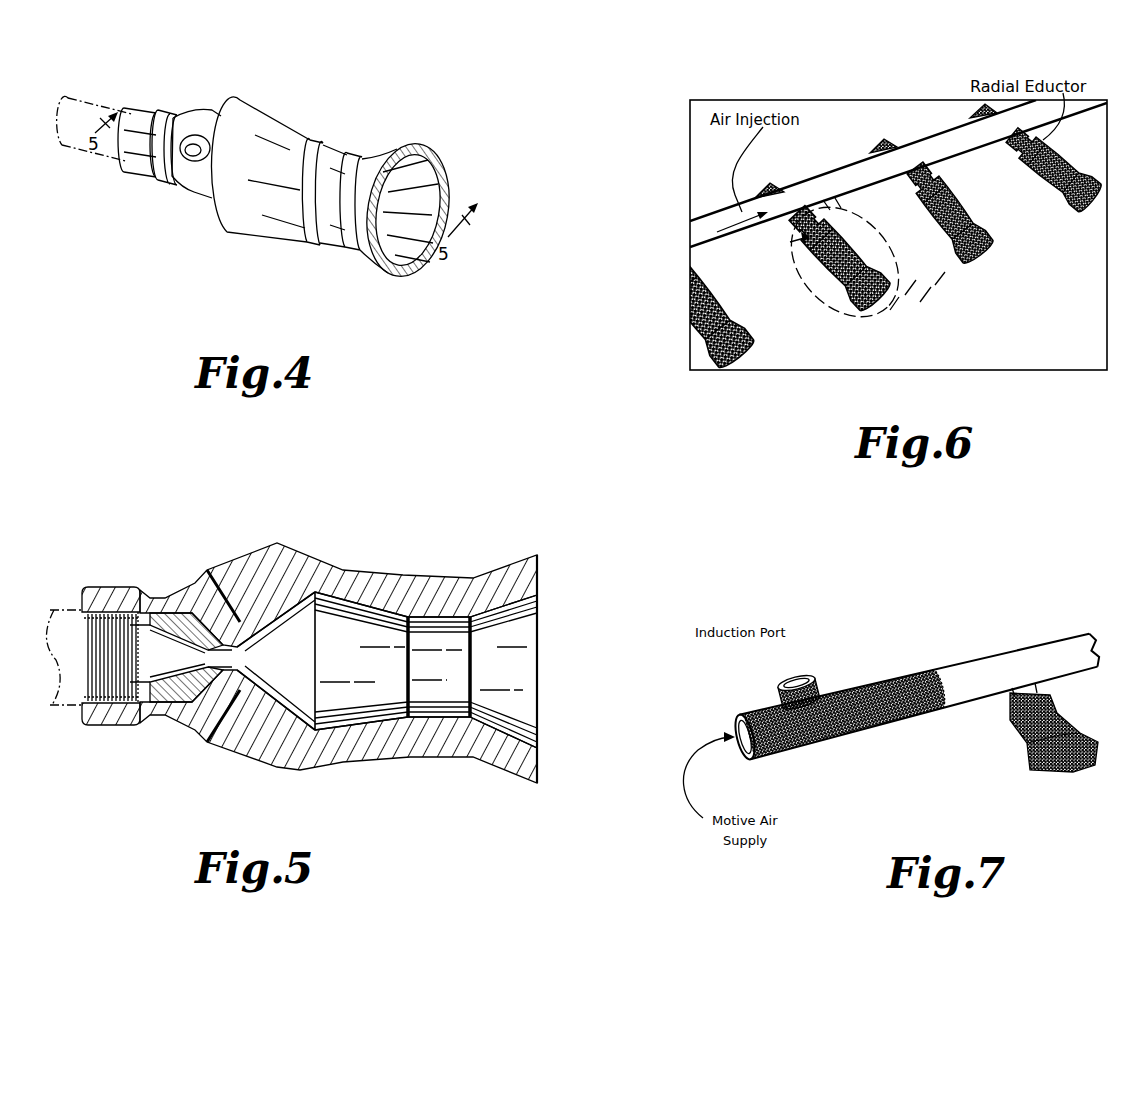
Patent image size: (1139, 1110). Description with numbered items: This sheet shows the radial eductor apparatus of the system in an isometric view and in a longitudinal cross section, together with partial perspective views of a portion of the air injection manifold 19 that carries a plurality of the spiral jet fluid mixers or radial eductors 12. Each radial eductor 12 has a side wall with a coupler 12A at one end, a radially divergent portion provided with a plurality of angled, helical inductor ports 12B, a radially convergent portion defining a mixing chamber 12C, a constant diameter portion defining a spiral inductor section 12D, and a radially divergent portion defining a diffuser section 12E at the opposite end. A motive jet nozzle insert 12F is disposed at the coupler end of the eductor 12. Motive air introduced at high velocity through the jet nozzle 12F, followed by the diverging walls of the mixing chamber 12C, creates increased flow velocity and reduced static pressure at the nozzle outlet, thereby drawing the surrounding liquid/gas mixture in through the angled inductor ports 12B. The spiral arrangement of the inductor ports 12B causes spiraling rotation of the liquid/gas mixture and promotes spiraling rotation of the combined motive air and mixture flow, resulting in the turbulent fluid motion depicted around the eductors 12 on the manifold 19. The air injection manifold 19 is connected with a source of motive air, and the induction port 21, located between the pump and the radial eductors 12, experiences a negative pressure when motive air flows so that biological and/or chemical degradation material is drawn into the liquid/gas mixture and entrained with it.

In FIG. 4, the radial eductor 12 is at (258, 169).
In FIG. 5, the radial eductor 12 is at (291, 646).
In FIG. 6, the radial eductor 12 is at (992, 205).
In FIG. 7, the radial eductor 12 is at (1060, 773).
In FIG. 4, the coupler 12A is at (155, 107).
In FIG. 5, the coupler 12A is at (108, 587).
In FIG. 4, the angled helical inductor ports 12B is at (213, 112).
In FIG. 5, the angled helical inductor ports 12B is at (240, 583).
In FIG. 5, the mixing chamber 12C is at (357, 630).
In FIG. 5, the spiral inductor section 12D is at (450, 640).
In FIG. 5, the diffuser section 12E is at (515, 610).
In FIG. 5, the motive jet nozzle insert 12F is at (183, 707).
In FIG. 6, the air injection manifold 19 is at (843, 170).
In FIG. 7, the air injection manifold 19 is at (962, 675).
In FIG. 7, the induction port 21 is at (740, 640).